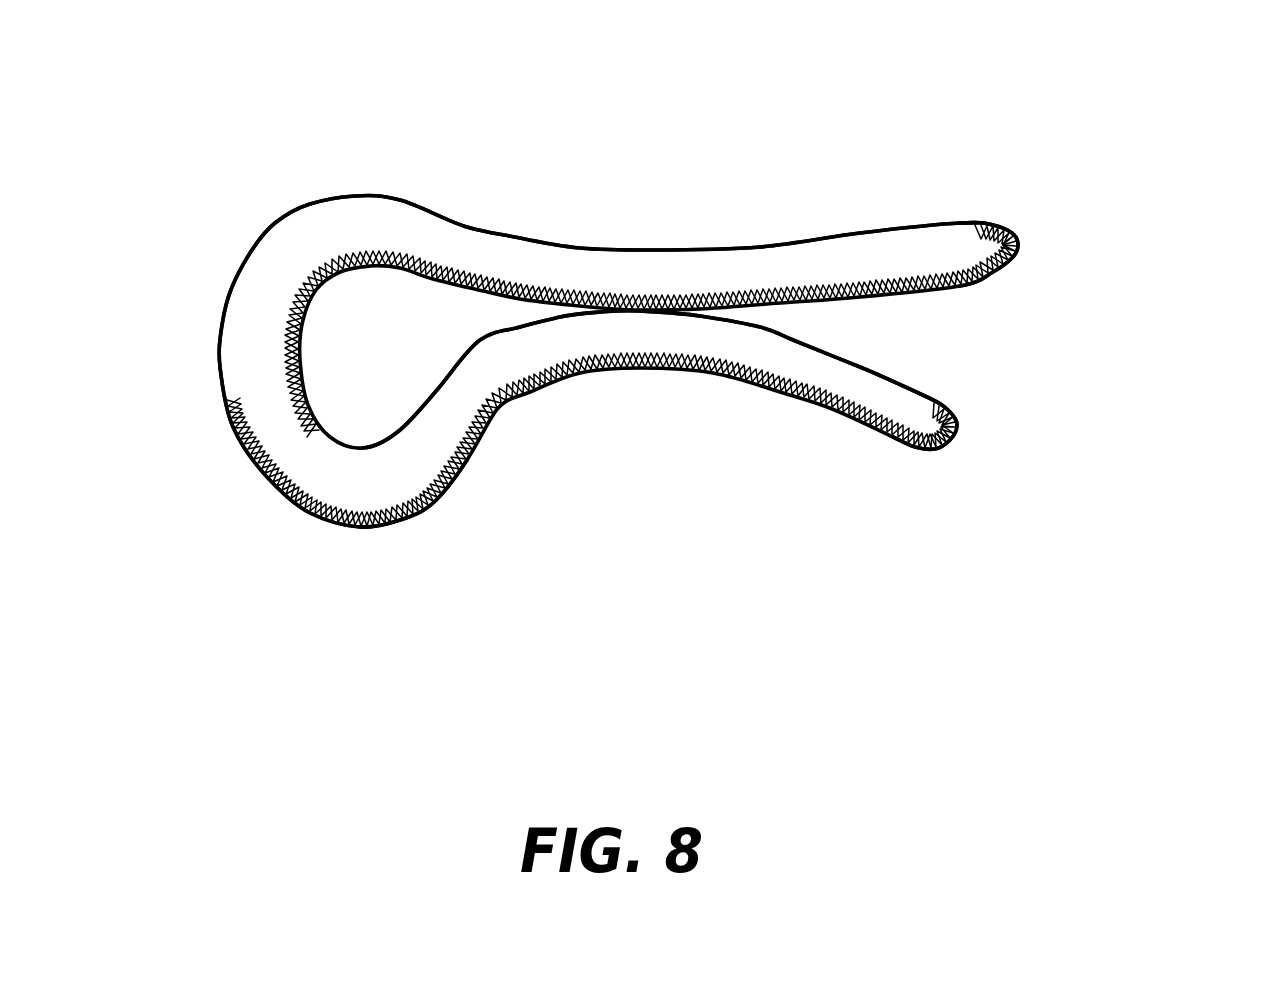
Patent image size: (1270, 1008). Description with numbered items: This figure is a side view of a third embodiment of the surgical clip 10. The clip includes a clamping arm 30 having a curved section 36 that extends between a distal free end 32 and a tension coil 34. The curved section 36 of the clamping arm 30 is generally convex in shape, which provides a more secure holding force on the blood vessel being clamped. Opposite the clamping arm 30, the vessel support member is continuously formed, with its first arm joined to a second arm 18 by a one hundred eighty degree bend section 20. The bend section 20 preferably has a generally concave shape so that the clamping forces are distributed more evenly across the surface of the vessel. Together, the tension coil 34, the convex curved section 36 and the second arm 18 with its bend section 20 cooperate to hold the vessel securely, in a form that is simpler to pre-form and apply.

The surgical clip 10 is at (1018, 145).
The second arm 18 is at (653, 249).
The bend section 20 is at (1019, 250).
The clamping arm 30 is at (817, 425).
The distal free end 32 is at (950, 447).
The tension coil 34 is at (228, 427).
The curved section 36 is at (633, 372).